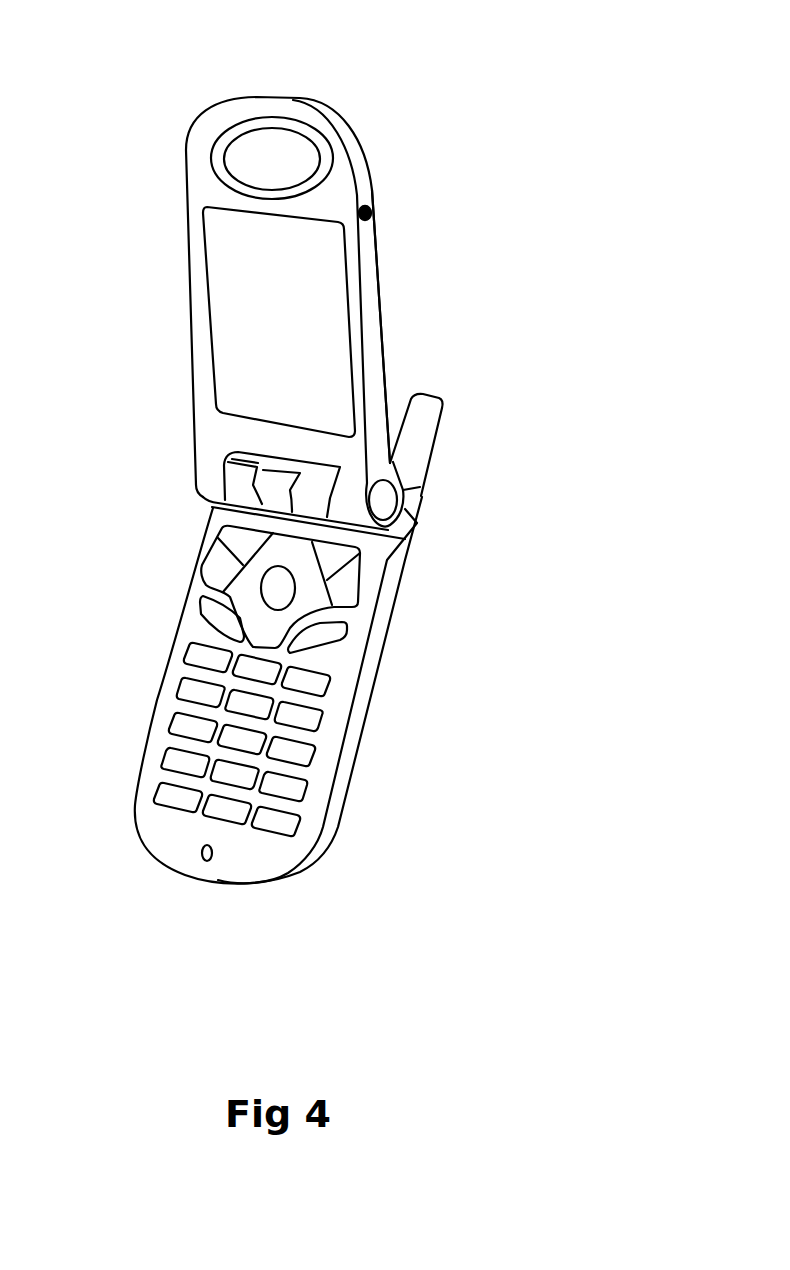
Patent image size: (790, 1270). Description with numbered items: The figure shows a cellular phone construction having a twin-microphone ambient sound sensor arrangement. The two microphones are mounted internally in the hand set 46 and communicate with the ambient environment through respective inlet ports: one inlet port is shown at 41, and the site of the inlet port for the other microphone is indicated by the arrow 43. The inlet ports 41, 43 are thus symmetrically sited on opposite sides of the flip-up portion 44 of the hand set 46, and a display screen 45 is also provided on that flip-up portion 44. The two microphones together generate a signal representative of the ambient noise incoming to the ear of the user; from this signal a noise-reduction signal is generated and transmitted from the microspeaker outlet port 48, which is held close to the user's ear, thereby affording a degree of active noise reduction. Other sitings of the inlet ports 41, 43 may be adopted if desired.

The inlet port 41 is at (371, 211).
The site of the inlet port for the other microphone 43 is at (181, 200).
The flip-up portion 44 is at (382, 333).
The display screen 45 is at (207, 357).
The hand set 46 is at (477, 530).
The microspeaker outlet port 48 is at (273, 153).